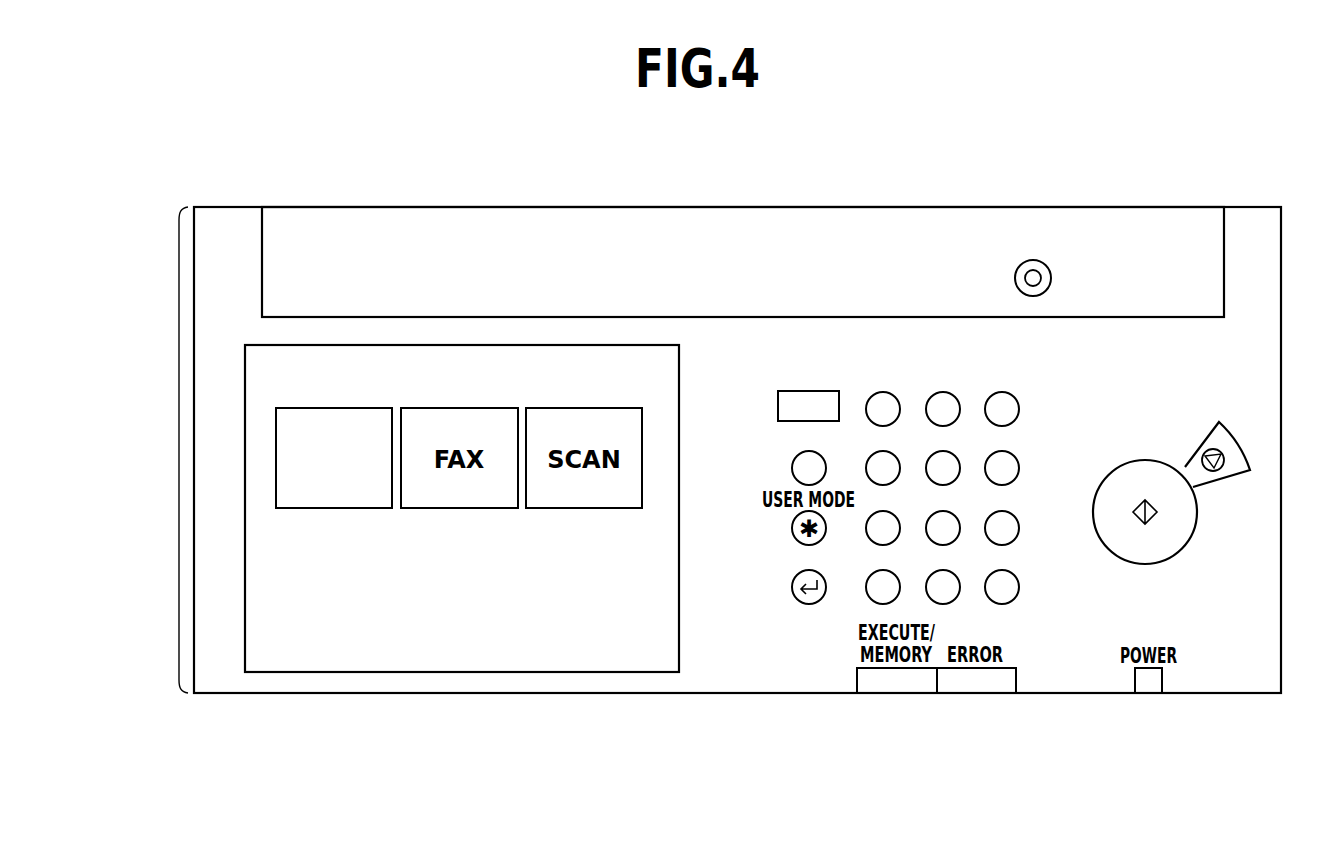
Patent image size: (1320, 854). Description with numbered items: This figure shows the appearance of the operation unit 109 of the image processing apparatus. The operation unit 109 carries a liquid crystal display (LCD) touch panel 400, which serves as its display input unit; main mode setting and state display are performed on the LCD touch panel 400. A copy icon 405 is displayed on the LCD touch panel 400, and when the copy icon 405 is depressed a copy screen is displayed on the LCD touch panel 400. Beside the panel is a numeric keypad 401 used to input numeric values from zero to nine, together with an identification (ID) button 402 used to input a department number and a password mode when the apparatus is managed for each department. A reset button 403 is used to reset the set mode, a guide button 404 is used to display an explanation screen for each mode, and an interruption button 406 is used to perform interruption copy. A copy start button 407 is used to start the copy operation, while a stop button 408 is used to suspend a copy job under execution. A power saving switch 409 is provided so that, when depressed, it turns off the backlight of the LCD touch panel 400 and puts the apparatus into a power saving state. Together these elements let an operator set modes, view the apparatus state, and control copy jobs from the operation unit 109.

The operation unit 109 is at (179, 442).
The liquid crystal display (LCD) touch panel 400 is at (523, 673).
The numeric keypad 401 is at (972, 442).
The identification (ID) button 402 is at (866, 585).
The reset button 403 is at (840, 406).
The guide button 404 is at (792, 465).
The copy icon 405 is at (335, 497).
The interruption button 406 is at (809, 604).
The copy start button 407 is at (1142, 548).
The stop button 408 is at (1237, 466).
The power saving switch (SW) 409 is at (1034, 277).